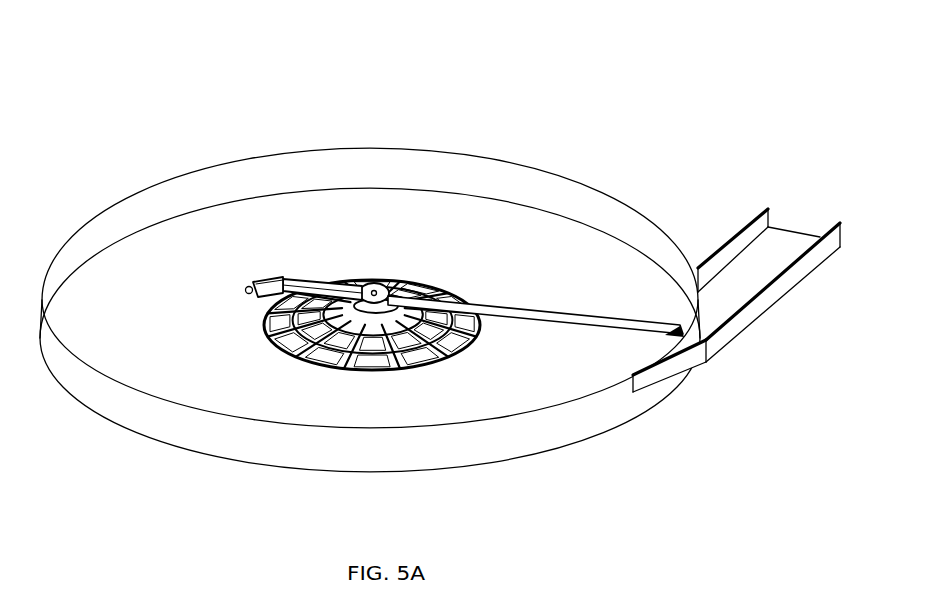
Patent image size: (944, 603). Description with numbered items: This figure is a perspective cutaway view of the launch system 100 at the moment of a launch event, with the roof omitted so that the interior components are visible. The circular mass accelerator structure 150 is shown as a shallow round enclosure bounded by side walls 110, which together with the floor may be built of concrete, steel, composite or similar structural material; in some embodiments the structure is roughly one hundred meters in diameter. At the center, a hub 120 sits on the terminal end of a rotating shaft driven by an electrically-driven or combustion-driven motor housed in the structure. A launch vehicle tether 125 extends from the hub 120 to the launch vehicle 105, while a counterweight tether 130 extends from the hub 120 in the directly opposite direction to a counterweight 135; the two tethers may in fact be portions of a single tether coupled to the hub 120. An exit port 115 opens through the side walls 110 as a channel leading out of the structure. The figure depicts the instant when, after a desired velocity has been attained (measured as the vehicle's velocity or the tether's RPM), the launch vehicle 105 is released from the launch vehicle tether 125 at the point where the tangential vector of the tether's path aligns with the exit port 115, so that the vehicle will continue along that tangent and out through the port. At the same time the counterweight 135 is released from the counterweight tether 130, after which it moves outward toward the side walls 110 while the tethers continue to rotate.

The launch system 100 is at (440, 264).
The launch vehicle 105 is at (678, 327).
The side walls 110 is at (568, 427).
The exit port 115 is at (772, 295).
The hub 120 is at (375, 290).
The launch vehicle tether 125 is at (510, 322).
The counterweight tether 130 is at (292, 282).
The counterweight 135 is at (253, 292).
The circular mass accelerator structure 150 is at (98, 484).